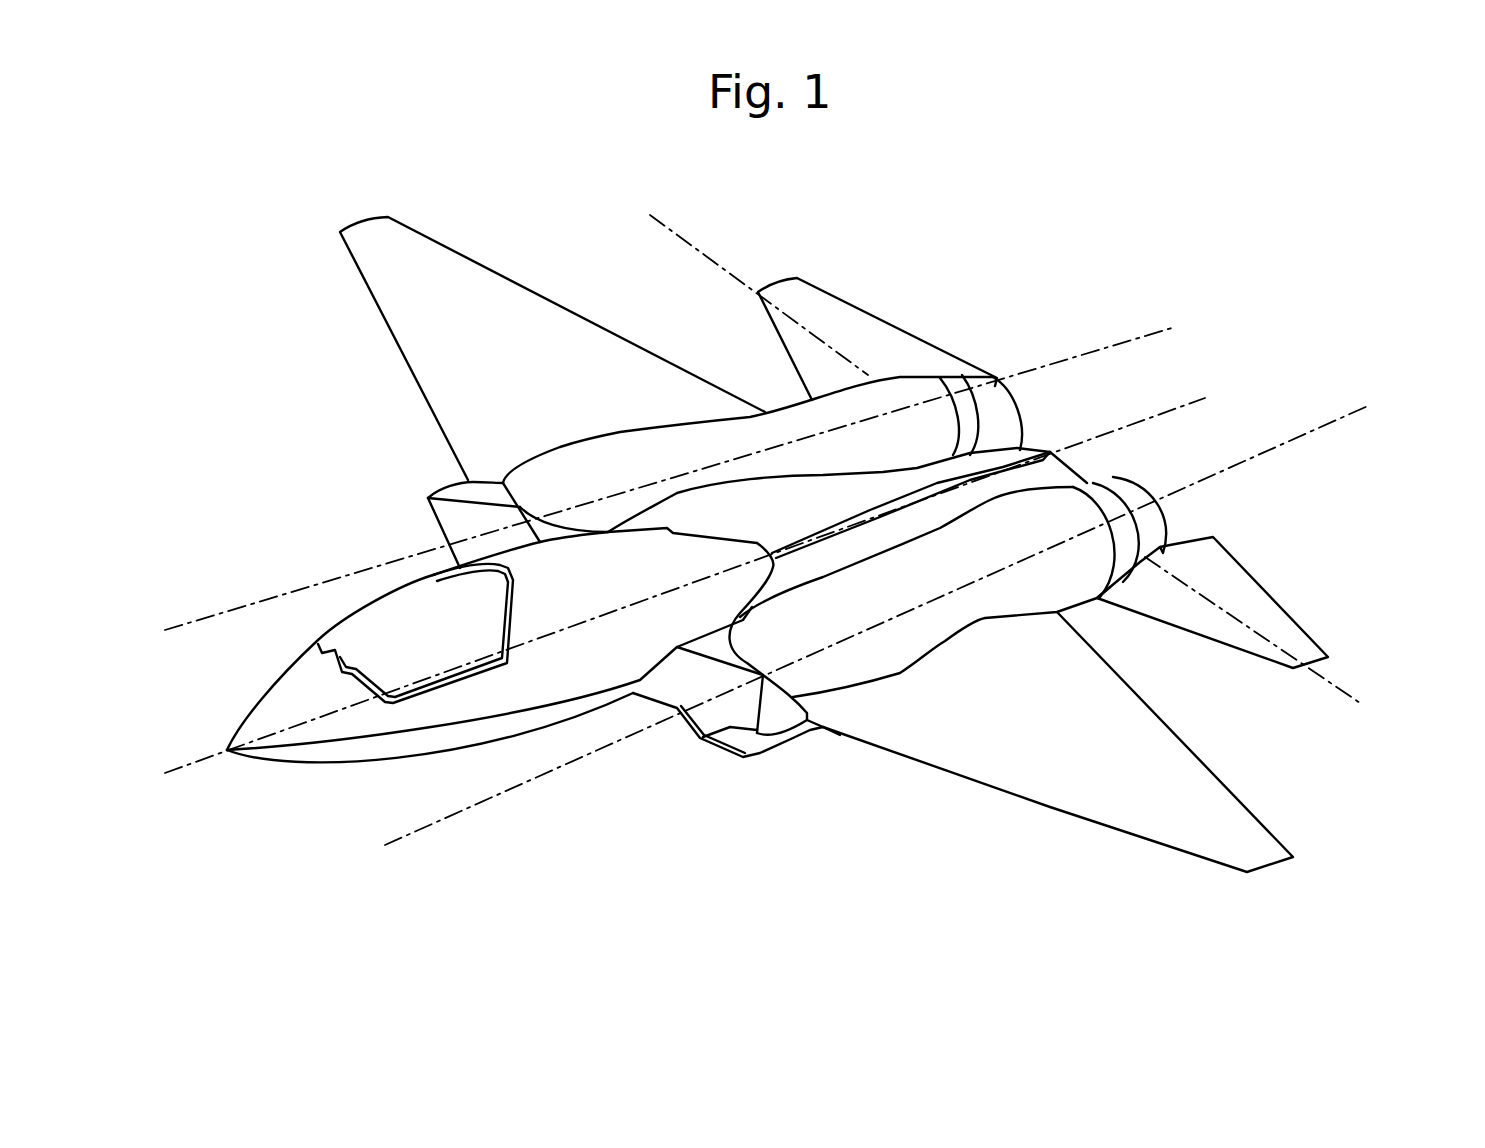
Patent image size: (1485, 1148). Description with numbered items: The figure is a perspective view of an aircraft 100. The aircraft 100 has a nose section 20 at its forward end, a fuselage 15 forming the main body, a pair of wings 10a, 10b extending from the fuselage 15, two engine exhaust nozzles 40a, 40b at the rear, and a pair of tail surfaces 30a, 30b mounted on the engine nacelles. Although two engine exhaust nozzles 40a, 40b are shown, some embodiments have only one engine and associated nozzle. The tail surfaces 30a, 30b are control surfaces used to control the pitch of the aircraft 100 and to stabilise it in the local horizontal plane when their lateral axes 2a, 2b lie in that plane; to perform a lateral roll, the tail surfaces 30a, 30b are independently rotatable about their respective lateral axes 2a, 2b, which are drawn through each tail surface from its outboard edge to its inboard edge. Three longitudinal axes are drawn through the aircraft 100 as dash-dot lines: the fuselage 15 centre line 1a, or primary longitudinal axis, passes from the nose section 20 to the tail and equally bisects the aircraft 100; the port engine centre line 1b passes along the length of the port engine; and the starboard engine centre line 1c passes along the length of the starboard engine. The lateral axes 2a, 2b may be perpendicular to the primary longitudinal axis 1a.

The aircraft 100 is at (304, 198).
The fuselage centre line 1a is at (197, 767).
The port engine centre line 1b is at (410, 830).
The starboard engine centre line 1c is at (222, 613).
The lateral axis 2a is at (698, 243).
The lateral axis 2b is at (1340, 690).
The wing 10a is at (390, 333).
The wing 10b is at (1038, 802).
The fuselage 15 is at (800, 518).
The nose section 20 is at (269, 690).
The tail surface 30a is at (848, 302).
The tail surface 30b is at (1243, 653).
The engine exhaust nozzle 40a is at (997, 377).
The engine exhaust nozzle 40b is at (1168, 517).